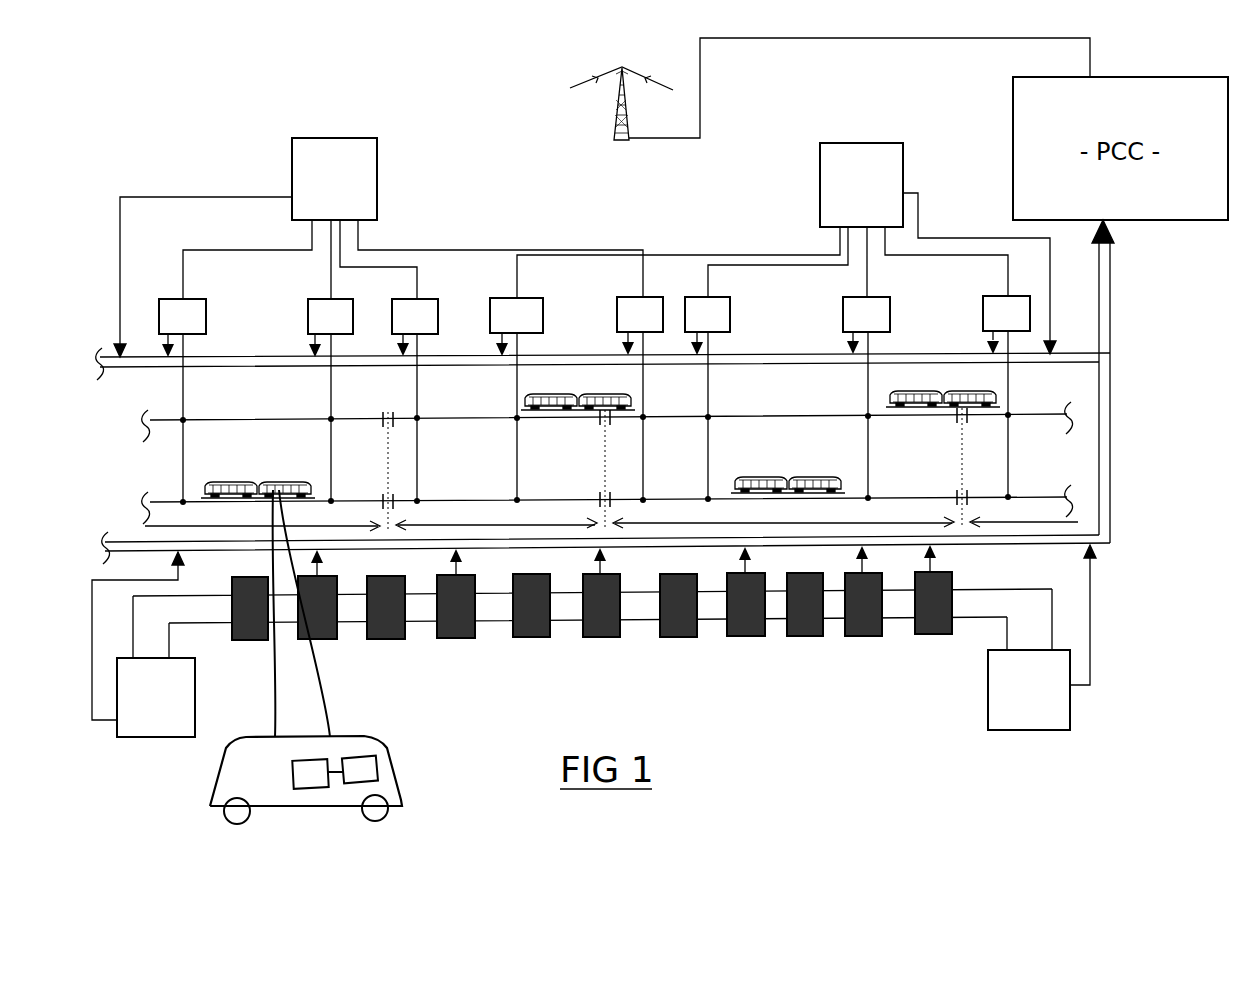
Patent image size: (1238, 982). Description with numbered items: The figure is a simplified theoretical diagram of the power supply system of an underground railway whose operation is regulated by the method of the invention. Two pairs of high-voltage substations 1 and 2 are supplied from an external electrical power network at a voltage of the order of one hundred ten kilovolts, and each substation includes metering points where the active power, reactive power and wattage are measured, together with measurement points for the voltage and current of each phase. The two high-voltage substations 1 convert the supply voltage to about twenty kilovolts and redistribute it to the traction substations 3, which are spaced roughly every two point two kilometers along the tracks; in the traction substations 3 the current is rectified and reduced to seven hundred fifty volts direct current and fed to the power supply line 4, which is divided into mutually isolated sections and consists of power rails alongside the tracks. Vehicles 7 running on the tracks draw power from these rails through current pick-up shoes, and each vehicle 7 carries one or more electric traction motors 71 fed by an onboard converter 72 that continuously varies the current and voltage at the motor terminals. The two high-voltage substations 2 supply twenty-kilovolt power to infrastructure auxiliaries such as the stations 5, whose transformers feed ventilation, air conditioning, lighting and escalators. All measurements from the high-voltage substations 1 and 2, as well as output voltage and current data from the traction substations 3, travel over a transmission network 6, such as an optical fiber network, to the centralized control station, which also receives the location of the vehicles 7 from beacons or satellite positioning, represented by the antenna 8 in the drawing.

The high-voltage substation 1 is at (312, 178).
The high-voltage substation 2 is at (140, 728).
The traction substation 3 is at (176, 302).
The power supply line 4 is at (165, 420).
The station 5 is at (313, 642).
The transmission network 6 is at (1110, 496).
The vehicle 7 is at (233, 486).
The radio antenna 8 is at (617, 108).
The electric traction motor 71 is at (367, 758).
The converter 72 is at (313, 758).